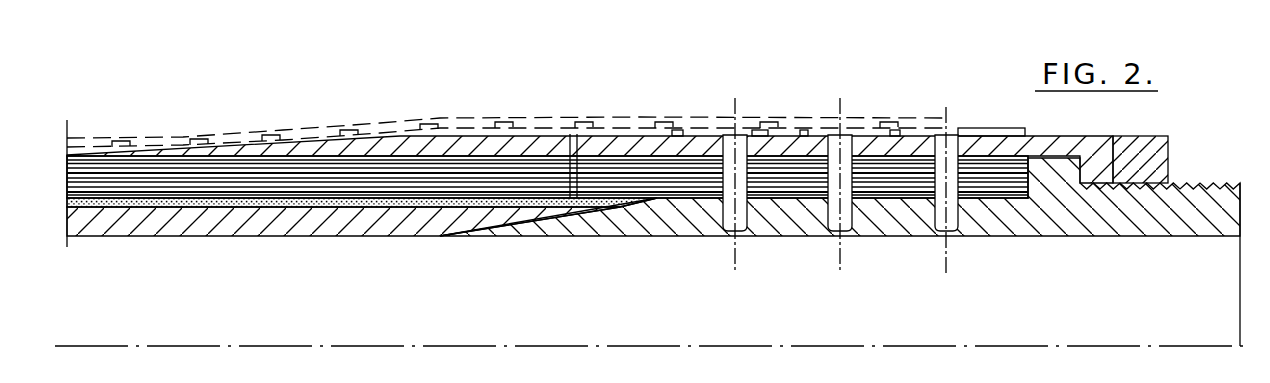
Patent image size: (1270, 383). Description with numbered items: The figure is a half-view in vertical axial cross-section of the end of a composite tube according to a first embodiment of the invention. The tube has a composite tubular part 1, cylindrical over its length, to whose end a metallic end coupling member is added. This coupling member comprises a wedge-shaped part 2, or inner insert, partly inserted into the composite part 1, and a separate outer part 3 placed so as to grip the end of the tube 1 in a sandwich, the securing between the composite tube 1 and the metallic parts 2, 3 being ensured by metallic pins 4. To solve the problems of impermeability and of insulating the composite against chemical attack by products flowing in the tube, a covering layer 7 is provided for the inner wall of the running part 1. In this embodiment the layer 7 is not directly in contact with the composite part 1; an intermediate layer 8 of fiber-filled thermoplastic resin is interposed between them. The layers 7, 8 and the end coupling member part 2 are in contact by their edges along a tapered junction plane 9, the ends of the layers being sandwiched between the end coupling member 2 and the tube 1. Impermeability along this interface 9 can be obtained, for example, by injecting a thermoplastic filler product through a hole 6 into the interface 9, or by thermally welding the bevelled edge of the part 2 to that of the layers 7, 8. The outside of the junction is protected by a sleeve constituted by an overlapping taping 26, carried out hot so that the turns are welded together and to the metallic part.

The composite tubular part 1 is at (318, 176).
The wedge-shaped part 2 is at (777, 223).
The outer part 3 is at (650, 147).
The metallic pins 4 is at (842, 157).
The hole 6 is at (574, 137).
The covering layer 7 is at (330, 218).
The intermediate layer 8 is at (402, 202).
The tapered junction plane 9 is at (539, 224).
The overlapping taping 26 is at (756, 111).